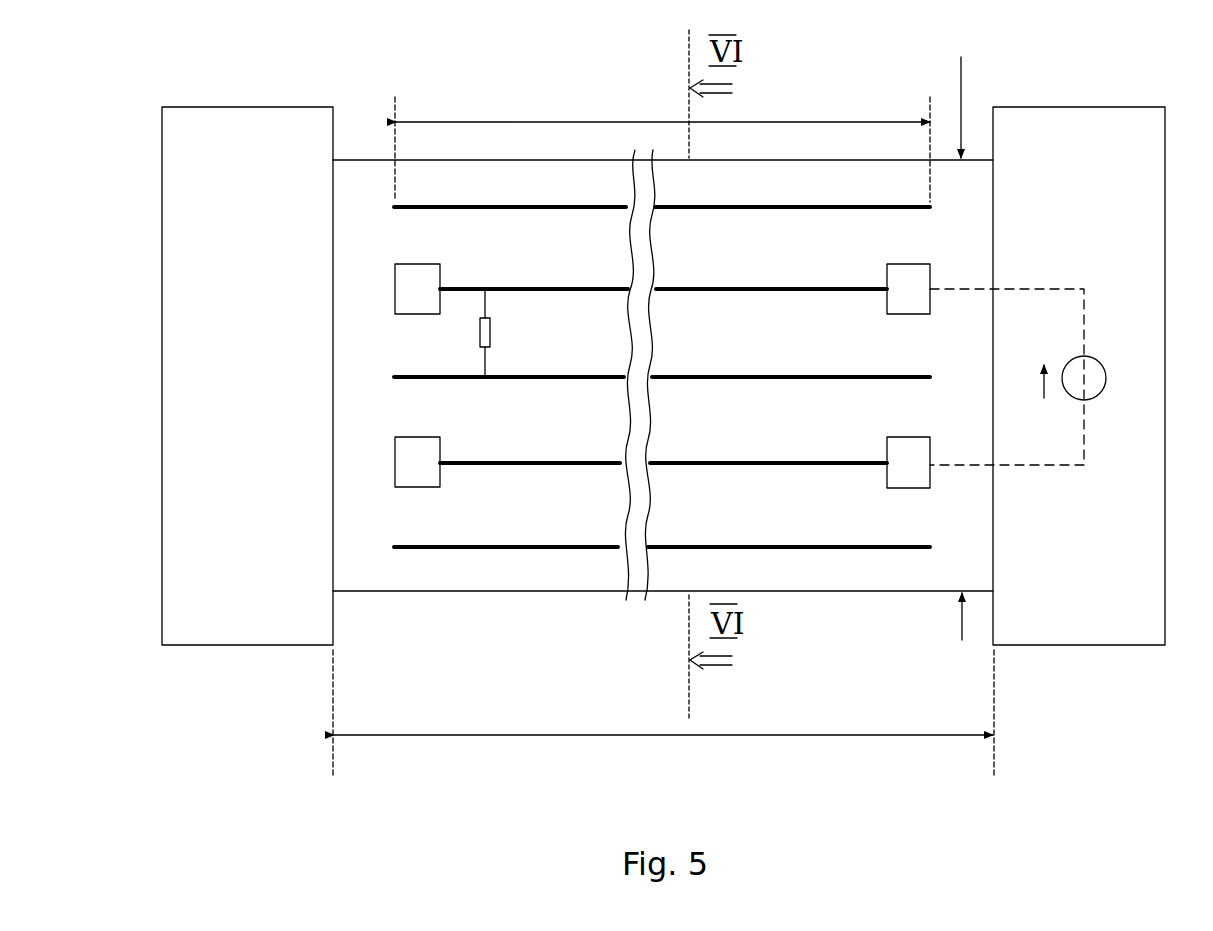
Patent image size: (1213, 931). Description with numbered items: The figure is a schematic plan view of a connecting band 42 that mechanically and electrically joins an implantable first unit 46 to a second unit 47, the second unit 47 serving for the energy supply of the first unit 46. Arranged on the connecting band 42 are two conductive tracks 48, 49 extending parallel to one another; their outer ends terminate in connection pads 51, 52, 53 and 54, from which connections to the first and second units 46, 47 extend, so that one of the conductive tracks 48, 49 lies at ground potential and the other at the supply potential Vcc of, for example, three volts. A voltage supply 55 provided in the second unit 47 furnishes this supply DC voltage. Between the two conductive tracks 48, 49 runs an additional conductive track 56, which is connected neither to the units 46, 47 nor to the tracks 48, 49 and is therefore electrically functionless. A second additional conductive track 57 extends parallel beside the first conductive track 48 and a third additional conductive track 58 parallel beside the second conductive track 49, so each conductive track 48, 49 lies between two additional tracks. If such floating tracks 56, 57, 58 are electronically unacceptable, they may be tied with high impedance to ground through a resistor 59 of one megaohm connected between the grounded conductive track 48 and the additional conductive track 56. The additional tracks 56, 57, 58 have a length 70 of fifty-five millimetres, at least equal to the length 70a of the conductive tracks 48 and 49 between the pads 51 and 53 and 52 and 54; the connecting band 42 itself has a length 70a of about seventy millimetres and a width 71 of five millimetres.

The connecting band 42 is at (855, 161).
The implantable first unit 46 is at (262, 126).
The second unit 47 is at (1087, 126).
The first conductive track 48 is at (590, 289).
The second conductive track 49 is at (700, 464).
The connection pad 51 is at (405, 291).
The connection pad 52 is at (405, 465).
The connection pad 53 is at (906, 281).
The connection pad 54 is at (906, 461).
The voltage supply 55 is at (1054, 382).
The additional conductive track 56 is at (577, 378).
The second additional conductive track 57 is at (478, 206).
The third additional conductive track 58 is at (815, 548).
The resistor 59 is at (482, 331).
The length of the additional conductive tracks 70 is at (778, 122).
The length of the connecting band 70a is at (830, 736).
The width of the connecting band 71 is at (961, 94).